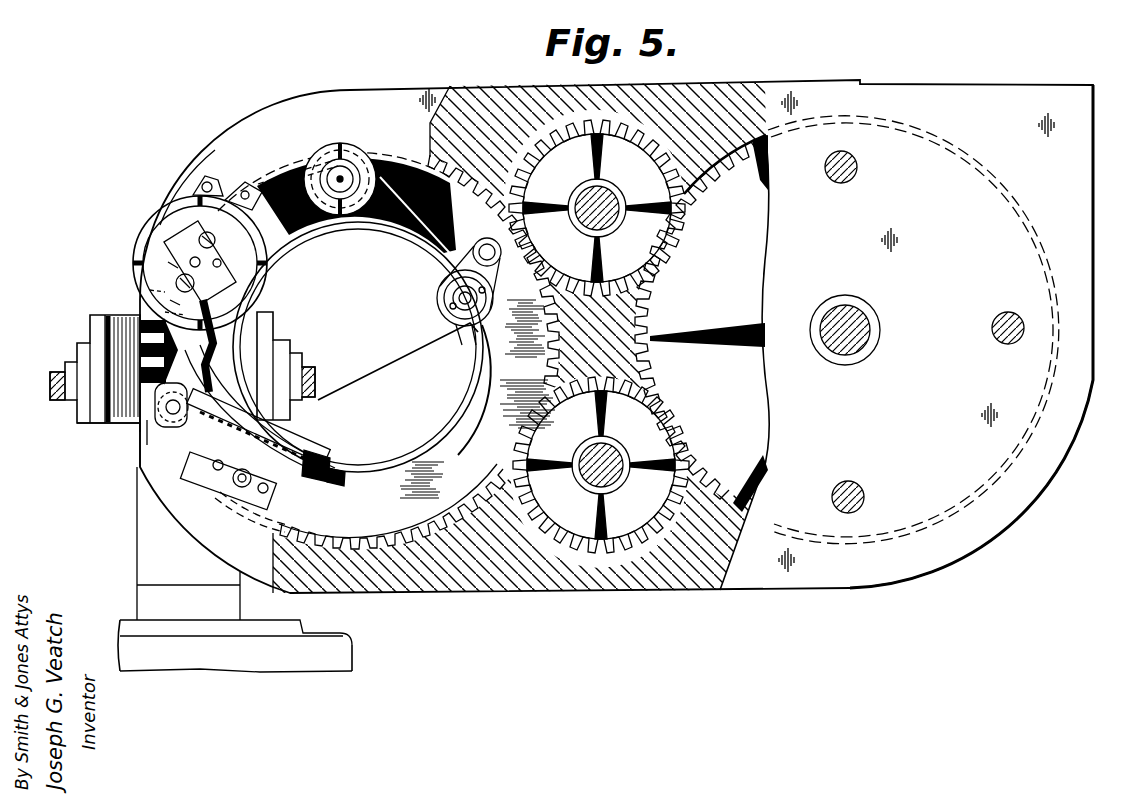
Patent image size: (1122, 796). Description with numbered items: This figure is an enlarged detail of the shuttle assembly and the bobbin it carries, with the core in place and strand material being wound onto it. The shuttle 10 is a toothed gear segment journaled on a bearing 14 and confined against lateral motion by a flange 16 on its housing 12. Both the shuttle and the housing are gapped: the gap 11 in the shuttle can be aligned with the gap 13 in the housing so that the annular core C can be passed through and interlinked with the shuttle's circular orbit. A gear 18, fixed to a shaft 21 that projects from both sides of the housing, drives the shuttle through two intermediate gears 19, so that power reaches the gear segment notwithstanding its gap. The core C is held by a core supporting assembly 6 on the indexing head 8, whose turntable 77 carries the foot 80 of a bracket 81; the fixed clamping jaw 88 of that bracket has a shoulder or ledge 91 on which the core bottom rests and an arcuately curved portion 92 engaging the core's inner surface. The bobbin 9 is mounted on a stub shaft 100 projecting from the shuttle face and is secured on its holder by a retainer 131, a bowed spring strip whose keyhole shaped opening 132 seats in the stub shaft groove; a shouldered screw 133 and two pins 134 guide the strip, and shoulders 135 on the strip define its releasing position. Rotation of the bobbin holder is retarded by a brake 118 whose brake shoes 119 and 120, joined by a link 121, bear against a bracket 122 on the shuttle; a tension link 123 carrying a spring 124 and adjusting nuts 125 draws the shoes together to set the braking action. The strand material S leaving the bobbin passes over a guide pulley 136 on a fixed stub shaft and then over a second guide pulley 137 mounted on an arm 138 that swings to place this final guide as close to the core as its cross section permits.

The housing 12 is at (406, 85).
The guide pulley 136 is at (338, 143).
The brake 118 is at (202, 180).
The link 121 is at (246, 185).
The brake shoe 120 is at (175, 203).
The stub shaft 100 is at (140, 215).
The pins 134 is at (165, 252).
The shouldered screw 133 is at (188, 245).
The retainer 131 is at (224, 229).
The keyhole shaped opening 132 is at (174, 281).
The shoulders 135 is at (152, 290).
The brake shoe 119 is at (268, 266).
The bobbin 9 is at (265, 283).
The arcuately curved portion 92 is at (272, 335).
The core C is at (50, 387).
The shoulder or ledge 91 is at (78, 418).
The fixed clamping jaw 88 is at (132, 440).
The gap 13 is at (148, 425).
The bracket 122 is at (218, 472).
The spring 124 is at (296, 442).
The nuts 125 is at (320, 458).
The tension link 123 is at (345, 488).
The flange 16 is at (288, 524).
The shuttle 10 is at (401, 462).
The gap 11 is at (474, 383).
The strand material S is at (392, 355).
The bearing 14 is at (402, 240).
The arm 138 is at (487, 238).
The guide pulley 137 is at (497, 299).
The intermediate gears 19 is at (629, 197).
The gear 18 is at (726, 277).
The shaft 21 is at (853, 318).
The bracket 81 is at (135, 540).
The foot 80 is at (155, 584).
The indexing head 8 is at (355, 637).
The core supporting assembly 6 is at (362, 650).
The turntable 77 is at (362, 666).